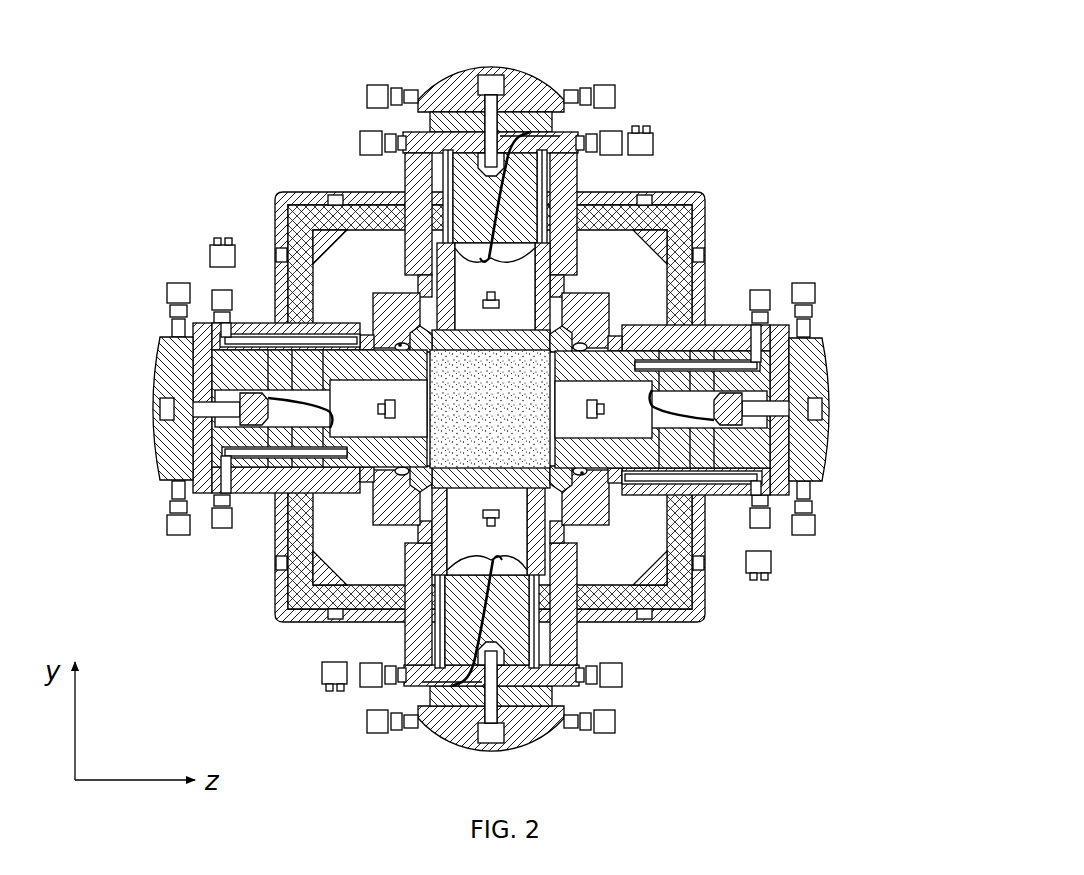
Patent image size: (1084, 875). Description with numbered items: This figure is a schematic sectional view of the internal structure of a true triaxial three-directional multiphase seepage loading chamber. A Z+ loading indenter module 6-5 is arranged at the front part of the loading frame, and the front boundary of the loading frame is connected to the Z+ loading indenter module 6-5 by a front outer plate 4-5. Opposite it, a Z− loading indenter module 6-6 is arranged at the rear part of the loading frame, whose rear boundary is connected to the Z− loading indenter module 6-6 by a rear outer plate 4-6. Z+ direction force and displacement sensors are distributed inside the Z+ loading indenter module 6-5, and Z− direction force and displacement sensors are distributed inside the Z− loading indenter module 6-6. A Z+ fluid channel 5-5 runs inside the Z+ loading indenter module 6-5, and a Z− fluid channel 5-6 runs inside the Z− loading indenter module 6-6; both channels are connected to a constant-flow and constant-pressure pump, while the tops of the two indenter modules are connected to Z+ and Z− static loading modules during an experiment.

The front outer plate 4-5 is at (297, 578).
The rear outer plate 4-6 is at (690, 575).
The Z+ fluid channel 5-5 is at (270, 458).
The Z− fluid channel 5-6 is at (693, 355).
The Z+ loading indenter module 6-5 is at (158, 437).
The Z− loading indenter module 6-6 is at (810, 392).